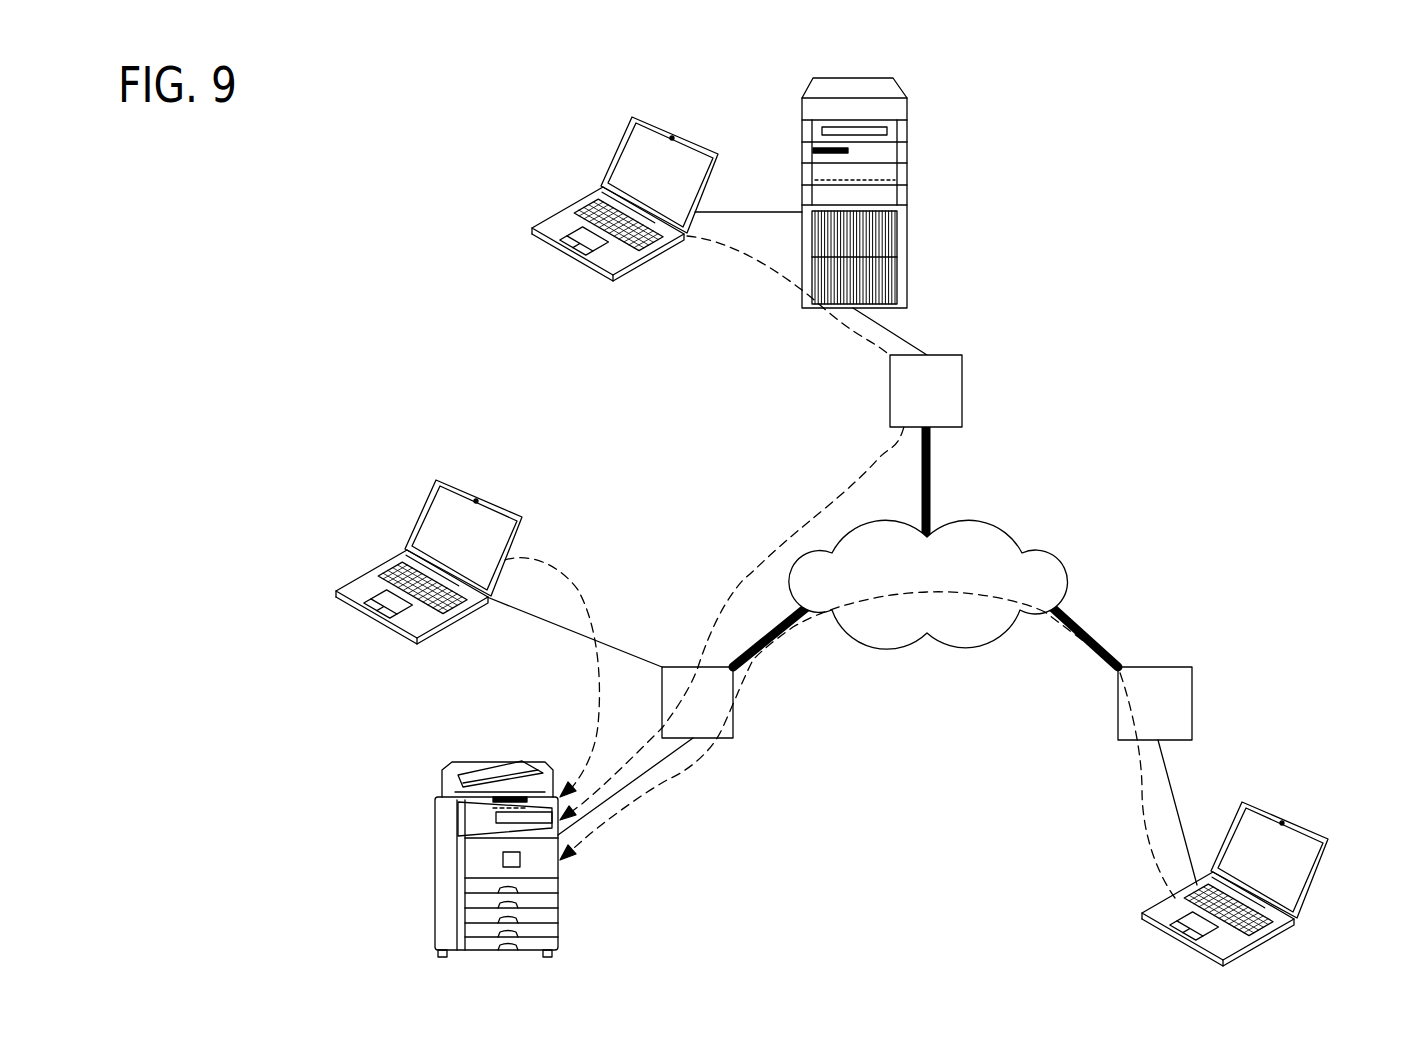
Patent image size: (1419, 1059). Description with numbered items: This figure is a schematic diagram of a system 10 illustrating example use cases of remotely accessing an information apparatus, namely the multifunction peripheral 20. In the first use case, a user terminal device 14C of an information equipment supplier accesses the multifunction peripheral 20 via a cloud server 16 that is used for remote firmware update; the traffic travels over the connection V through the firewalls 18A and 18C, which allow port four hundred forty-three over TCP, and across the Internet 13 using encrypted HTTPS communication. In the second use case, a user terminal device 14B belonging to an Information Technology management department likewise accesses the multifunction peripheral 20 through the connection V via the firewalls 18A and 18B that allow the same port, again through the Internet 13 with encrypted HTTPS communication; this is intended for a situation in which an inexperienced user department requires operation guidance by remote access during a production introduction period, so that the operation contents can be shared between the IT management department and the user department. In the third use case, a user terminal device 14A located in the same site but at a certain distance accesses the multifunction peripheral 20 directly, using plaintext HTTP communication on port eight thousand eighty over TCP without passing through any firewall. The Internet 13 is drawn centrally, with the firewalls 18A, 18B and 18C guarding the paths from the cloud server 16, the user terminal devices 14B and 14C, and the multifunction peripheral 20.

The image forming system 10 is at (328, 163).
The Internet 13 is at (993, 522).
The terminal device 14A is at (432, 630).
The user terminal device 14B is at (1323, 863).
The user terminal device 14C is at (627, 271).
The cloud server 16 is at (907, 208).
The firewall 18A is at (733, 739).
The firewall 18B is at (1192, 667).
The firewall 18C is at (962, 388).
The multifunction peripheral 20 is at (558, 886).
The connection V is at (1102, 641).